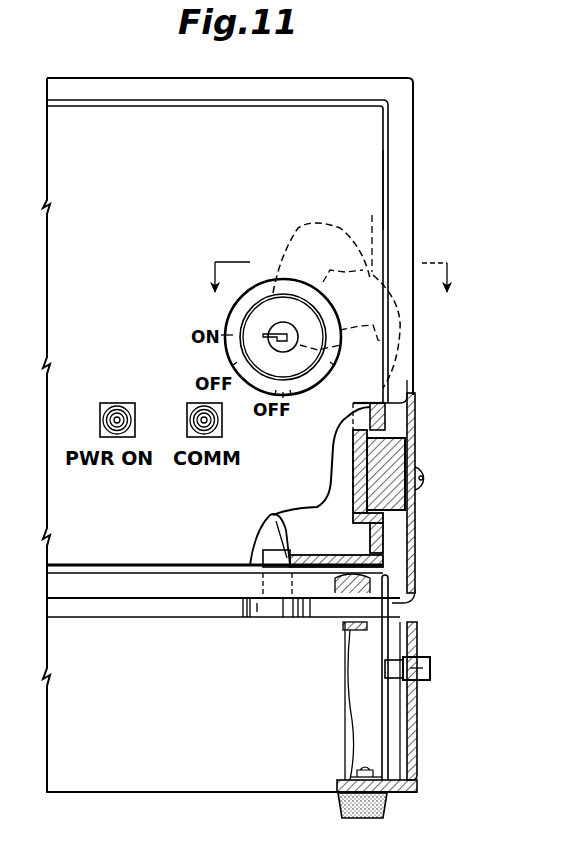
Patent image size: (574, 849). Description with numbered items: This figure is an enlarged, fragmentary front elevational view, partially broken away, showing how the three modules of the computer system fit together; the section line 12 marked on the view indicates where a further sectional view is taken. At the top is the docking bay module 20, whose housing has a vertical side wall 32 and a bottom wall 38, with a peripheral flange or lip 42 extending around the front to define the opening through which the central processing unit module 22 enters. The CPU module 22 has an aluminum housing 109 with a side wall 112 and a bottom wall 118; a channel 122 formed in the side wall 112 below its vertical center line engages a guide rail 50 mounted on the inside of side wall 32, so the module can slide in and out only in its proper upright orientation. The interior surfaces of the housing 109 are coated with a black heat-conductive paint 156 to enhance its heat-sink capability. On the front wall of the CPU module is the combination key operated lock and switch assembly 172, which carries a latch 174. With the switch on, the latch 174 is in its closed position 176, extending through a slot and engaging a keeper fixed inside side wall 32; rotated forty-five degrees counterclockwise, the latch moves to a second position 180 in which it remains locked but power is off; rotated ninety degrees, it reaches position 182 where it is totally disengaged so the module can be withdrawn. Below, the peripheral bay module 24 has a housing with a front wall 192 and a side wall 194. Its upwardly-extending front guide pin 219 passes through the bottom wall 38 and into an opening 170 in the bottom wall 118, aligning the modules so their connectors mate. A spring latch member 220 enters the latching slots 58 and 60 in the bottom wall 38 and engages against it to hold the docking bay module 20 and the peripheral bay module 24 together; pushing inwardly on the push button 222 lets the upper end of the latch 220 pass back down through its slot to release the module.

The docking bay module 20 is at (424, 105).
The central processing unit (CPU) module 22 is at (350, 124).
The aluminum housing 109 is at (392, 183).
The section line 12 is at (335, 265).
The combination key operated lock and switch assembly 172 is at (222, 312).
The off position of latch 182 is at (320, 227).
The second position of latch 180 is at (350, 300).
The latch 174 is at (408, 369).
The side wall 32 is at (416, 404).
The guide rail 50 is at (404, 458).
The closed position of latch 176 is at (350, 406).
The black heat-conductive paint 156 is at (350, 457).
The channel 122 is at (353, 477).
The side wall 112 is at (386, 527).
The bottom wall 118 is at (416, 553).
The guide pin 219 is at (270, 540).
The opening 170 is at (256, 546).
The peripheral flange or lip 42 is at (223, 591).
The latching slot 58 is at (337, 583).
The bottom wall 38 is at (402, 601).
The latching slot 60 is at (367, 625).
The spring latch member 220 is at (382, 695).
The push button 222 is at (430, 676).
The side wall 194 is at (418, 740).
The peripheral bay module 24 is at (428, 774).
The front wall 192 is at (300, 772).